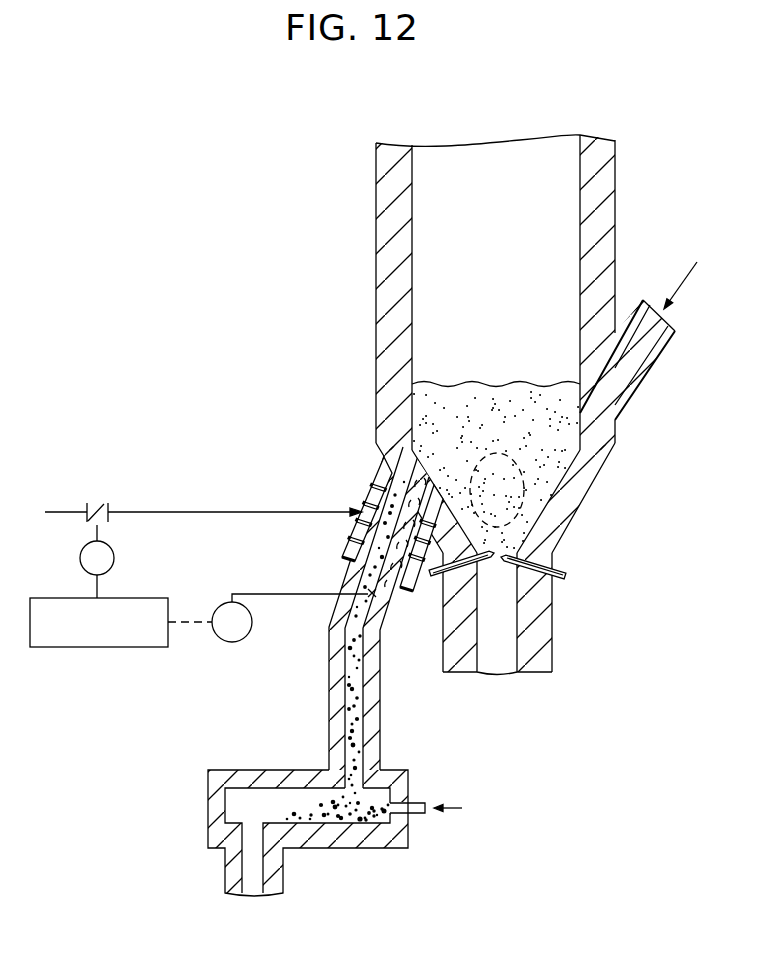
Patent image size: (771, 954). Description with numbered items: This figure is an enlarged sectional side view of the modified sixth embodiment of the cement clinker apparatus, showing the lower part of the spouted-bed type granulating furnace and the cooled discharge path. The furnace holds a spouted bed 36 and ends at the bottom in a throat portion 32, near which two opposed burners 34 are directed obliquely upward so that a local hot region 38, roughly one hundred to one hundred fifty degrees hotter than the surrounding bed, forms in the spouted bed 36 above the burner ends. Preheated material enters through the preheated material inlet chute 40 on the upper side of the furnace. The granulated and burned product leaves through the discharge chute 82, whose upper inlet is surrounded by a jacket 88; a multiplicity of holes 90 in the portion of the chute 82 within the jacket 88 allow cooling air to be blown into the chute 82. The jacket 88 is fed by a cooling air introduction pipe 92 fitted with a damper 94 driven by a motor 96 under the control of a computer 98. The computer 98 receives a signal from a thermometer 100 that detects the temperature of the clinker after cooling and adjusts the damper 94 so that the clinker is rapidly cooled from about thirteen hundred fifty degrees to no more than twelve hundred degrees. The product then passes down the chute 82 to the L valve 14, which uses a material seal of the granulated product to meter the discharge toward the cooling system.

The L valve 14 is at (368, 841).
The throat portion 32 is at (553, 648).
The burners 34 is at (436, 585).
The spouted bed 36 is at (418, 422).
The local hot region 38 is at (523, 503).
The preheated material inlet chute 40 is at (658, 356).
The discharge chute 82 is at (387, 513).
The jacket 88 is at (362, 503).
The holes 90 is at (372, 548).
The cooling air introduction pipe 92 is at (185, 512).
The damper 94 is at (84, 505).
The motor 96 is at (114, 562).
The computer 98 is at (134, 648).
The thermometer 100 is at (237, 643).